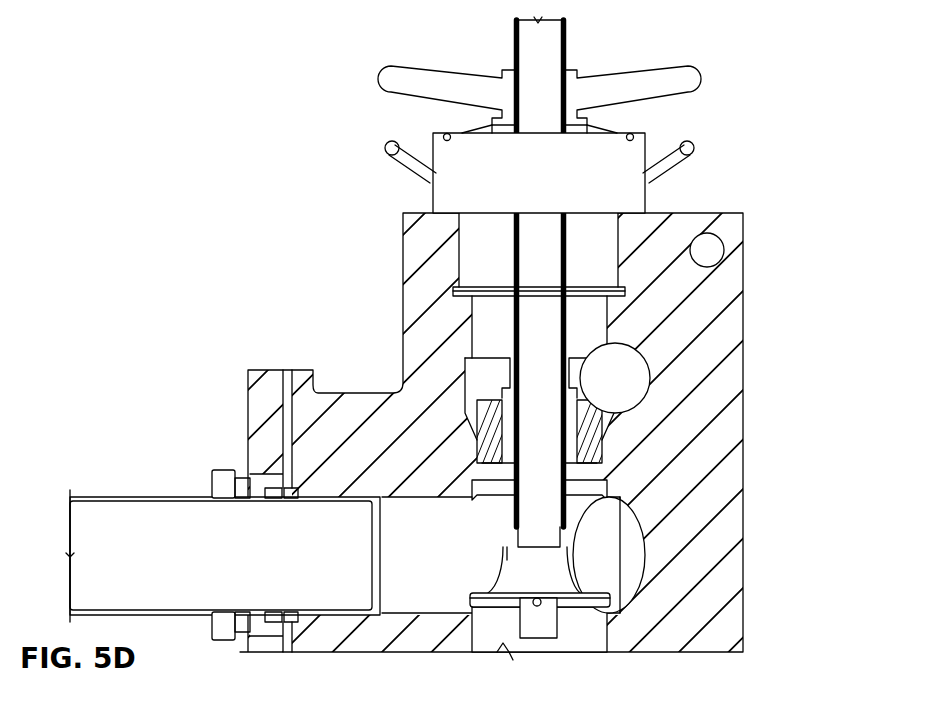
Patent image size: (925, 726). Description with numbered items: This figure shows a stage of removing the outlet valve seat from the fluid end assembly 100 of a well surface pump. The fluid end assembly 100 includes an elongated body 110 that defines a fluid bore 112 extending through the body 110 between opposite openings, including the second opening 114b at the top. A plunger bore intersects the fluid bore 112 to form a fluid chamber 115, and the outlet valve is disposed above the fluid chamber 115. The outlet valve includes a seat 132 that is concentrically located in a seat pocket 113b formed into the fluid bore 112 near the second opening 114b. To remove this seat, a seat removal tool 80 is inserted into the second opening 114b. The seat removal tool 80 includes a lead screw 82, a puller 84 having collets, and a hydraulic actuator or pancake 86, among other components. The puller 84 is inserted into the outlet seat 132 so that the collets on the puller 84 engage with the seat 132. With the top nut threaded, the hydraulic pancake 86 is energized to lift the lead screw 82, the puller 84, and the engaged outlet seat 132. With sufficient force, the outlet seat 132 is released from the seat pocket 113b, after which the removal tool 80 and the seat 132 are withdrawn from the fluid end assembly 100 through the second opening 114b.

The fluid end assembly 100 is at (118, 105).
The seat removal tool 80 is at (586, 118).
The lead screw 82 is at (514, 45).
The hydraulic actuator or pancake 86 is at (716, 102).
The puller 84 is at (600, 384).
The body 110 is at (402, 228).
The fluid bore 112 is at (585, 548).
The seat pocket 113b is at (483, 430).
The second opening 114b is at (613, 214).
The fluid chamber 115 is at (288, 555).
The seat 132 is at (600, 449).